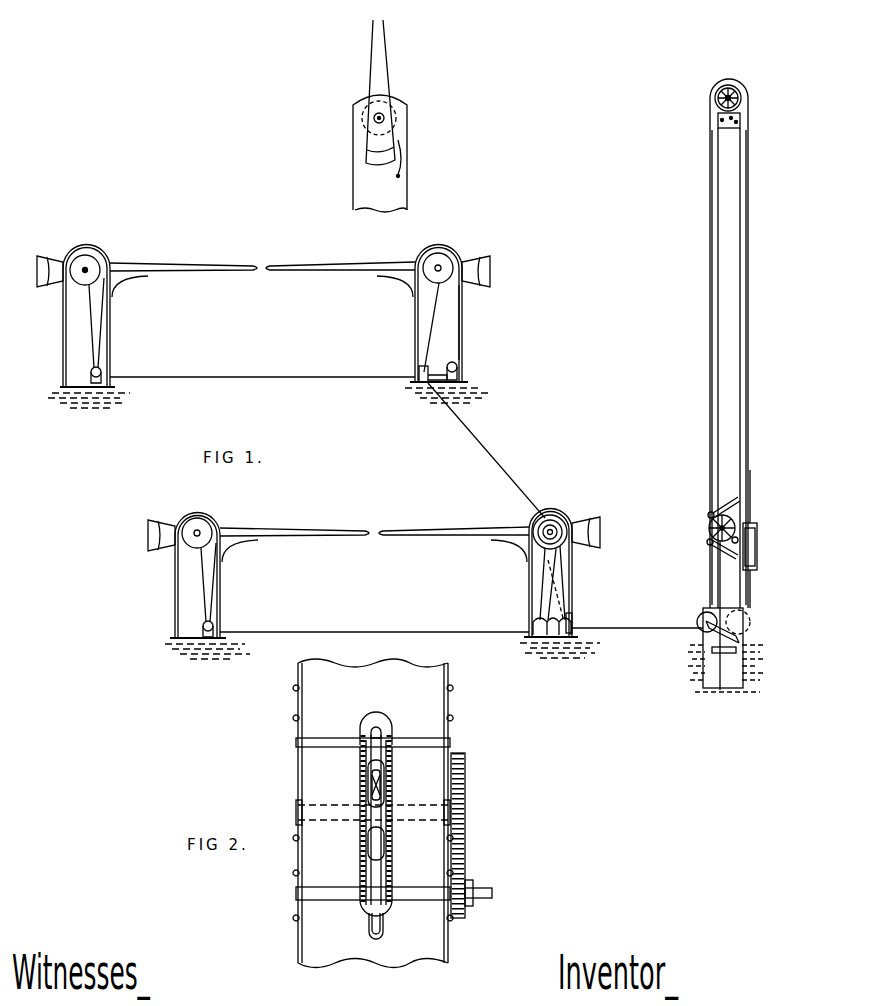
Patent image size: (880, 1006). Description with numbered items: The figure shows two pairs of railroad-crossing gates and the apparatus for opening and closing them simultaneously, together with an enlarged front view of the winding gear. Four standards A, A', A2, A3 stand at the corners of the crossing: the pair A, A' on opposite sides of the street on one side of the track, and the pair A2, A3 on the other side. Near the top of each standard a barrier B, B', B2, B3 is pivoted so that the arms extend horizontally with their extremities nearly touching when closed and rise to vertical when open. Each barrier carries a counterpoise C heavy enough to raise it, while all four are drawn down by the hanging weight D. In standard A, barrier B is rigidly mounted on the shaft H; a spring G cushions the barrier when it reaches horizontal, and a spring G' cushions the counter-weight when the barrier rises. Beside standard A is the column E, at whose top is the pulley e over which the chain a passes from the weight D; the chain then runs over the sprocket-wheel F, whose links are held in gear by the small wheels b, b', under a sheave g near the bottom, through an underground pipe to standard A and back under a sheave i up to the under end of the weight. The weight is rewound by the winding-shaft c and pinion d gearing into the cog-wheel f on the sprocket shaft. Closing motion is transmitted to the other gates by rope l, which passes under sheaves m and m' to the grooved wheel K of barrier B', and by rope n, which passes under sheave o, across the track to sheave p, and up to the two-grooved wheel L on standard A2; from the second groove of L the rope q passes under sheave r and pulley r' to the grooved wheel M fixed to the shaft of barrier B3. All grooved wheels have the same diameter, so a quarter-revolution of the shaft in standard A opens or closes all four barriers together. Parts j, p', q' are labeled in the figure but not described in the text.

In FIG. 1, the barrier-standard A is at (557, 584).
In FIG. 1, the standard A' is at (207, 586).
In FIG. 1, the standard A2 is at (447, 323).
In FIG. 1, the standard A3 is at (89, 326).
In FIG. 1, the barrier B is at (454, 523).
In FIG. 1, the barrier B' is at (294, 522).
In FIG. 1, the barrier B2 is at (340, 255).
In FIG. 1, the barrier B3 is at (183, 256).
In FIG. 1, the counterpoise C is at (316, 403).
In FIG. 1, the winding-shaft c is at (757, 537).
In FIG. 2, the winding-shaft c is at (373, 894).
In FIG. 1, the weight D is at (744, 539).
In FIG. 1, the column E is at (729, 343).
In FIG. 1, the sprocket-wheel F is at (709, 530).
In FIG. 2, the sprocket-wheel F is at (367, 787).
In FIG. 1, the spring G is at (319, 422).
In FIG. 1, the spring G' is at (391, 116).
In FIG. 1, the shaft H is at (565, 525).
In FIG. 1, the grooved wheel K is at (197, 534).
In FIG. 1, the grooved wheel L is at (438, 268).
In FIG. 1, the grooved wheel M is at (85, 270).
In FIG. 1, the chain a is at (645, 386).
In FIG. 1, the small wheel b is at (714, 507).
In FIG. 2, the small wheel b is at (366, 926).
In FIG. 1, the small wheel b' is at (712, 548).
In FIG. 2, the pinion d is at (470, 882).
In FIG. 1, the pulley e is at (736, 89).
In FIG. 2, the cog-wheel f is at (466, 788).
In FIG. 1, the sheave g is at (697, 622).
In FIG. 1, the sheave i is at (750, 622).
In FIG. 2, the guide j is at (376, 722).
In FIG. 1, the chain or rope l is at (327, 455).
In FIG. 1, the sheave m is at (538, 622).
In FIG. 1, the sheave m' is at (221, 622).
In FIG. 1, the rope n is at (582, 593).
In FIG. 1, the sheave o is at (573, 618).
In FIG. 1, the sheave p is at (568, 589).
In FIG. 1, the guide p' is at (497, 474).
In FIG. 1, the rope q is at (262, 374).
In FIG. 1, the cord q' is at (471, 322).
In FIG. 1, the sheave r is at (460, 367).
In FIG. 1, the pulley r' is at (106, 368).